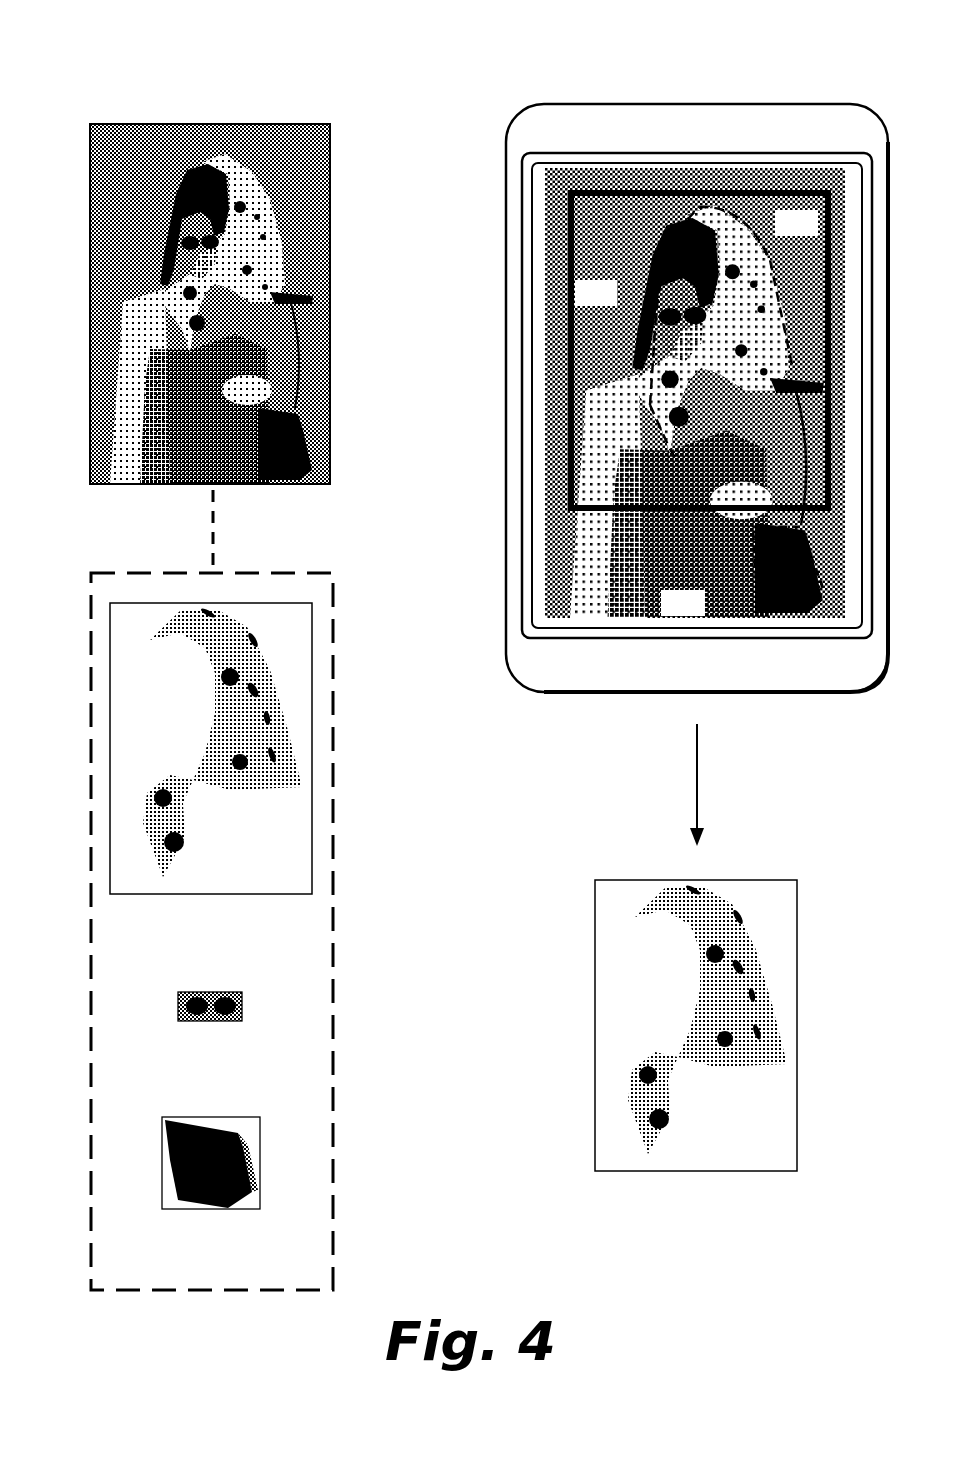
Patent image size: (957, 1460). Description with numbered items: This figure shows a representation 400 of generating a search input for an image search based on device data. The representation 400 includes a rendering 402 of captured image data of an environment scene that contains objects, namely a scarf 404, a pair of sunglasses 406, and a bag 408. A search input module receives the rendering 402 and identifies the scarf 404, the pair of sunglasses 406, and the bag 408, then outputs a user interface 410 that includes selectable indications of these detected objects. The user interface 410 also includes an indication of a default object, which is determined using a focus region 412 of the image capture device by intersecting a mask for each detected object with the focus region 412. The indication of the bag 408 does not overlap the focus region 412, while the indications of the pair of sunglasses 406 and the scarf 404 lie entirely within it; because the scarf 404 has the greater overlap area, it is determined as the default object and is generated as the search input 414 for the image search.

The representation 400 is at (146, 60).
The rendering 402 is at (308, 124).
The scarf 404 is at (212, 894).
The pair of sunglasses 406 is at (210, 992).
The bag 408 is at (210, 1117).
The user interface 410 is at (782, 168).
The focus region 412 is at (735, 193).
The search input 414 is at (630, 1173).